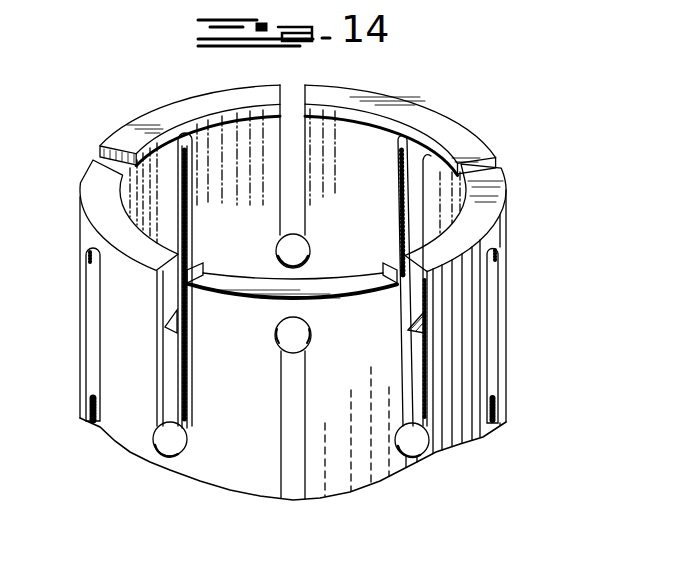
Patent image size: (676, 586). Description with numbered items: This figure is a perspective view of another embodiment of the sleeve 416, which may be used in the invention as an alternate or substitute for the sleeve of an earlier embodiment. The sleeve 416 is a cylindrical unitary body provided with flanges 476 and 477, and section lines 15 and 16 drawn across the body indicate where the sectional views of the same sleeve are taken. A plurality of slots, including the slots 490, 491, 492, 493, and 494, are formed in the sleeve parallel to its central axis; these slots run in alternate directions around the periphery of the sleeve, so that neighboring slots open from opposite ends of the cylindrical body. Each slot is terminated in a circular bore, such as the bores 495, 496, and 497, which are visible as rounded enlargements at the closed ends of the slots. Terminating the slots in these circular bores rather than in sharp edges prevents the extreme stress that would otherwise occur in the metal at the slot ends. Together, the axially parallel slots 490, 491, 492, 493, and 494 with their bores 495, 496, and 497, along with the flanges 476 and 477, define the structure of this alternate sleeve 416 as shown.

The sleeve 416 is at (470, 457).
The flange 476 is at (241, 108).
The flange 477 is at (407, 328).
The slot 490 is at (491, 349).
The slot 491 is at (430, 405).
The slot 492 is at (300, 472).
The slot 493 is at (181, 401).
The slot 494 is at (89, 351).
The circular bore 495 is at (414, 462).
The circular bore 496 is at (277, 337).
The circular bore 497 is at (163, 452).
The section line 15 is at (170, 192).
The section line 16 is at (240, 297).